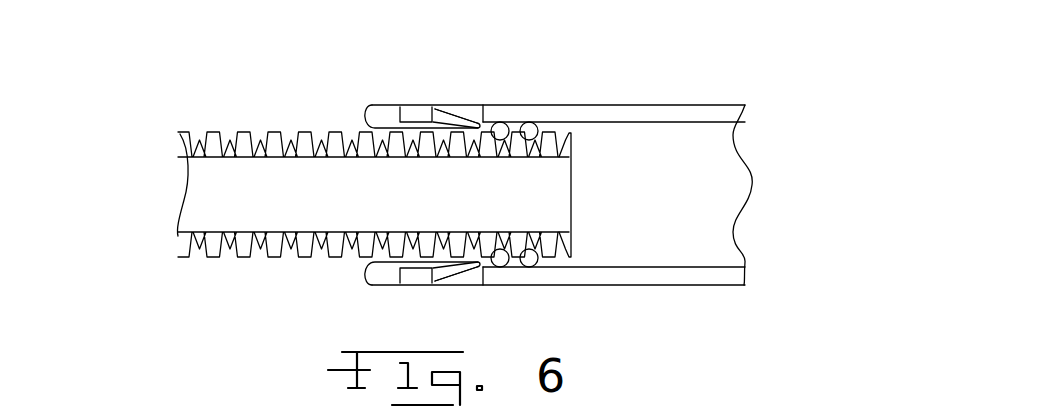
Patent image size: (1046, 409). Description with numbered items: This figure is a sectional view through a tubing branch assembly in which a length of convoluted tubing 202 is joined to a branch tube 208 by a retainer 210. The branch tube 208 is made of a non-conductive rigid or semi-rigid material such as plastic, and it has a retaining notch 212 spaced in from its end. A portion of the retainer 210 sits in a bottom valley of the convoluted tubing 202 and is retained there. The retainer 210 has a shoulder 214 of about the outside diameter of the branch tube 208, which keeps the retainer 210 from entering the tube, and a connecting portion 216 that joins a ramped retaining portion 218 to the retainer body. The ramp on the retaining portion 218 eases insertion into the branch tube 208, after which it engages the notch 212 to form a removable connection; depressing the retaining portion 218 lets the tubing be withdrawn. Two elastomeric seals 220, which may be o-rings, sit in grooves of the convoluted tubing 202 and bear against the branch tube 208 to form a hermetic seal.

The convoluted tubing 202 is at (210, 132).
The branch tube 208 is at (562, 191).
The retainer 210 is at (413, 182).
The retaining notch 212 is at (478, 104).
The shoulder 214 is at (388, 106).
The connecting portion 216 is at (417, 107).
The ramped retaining portion 218 is at (450, 106).
The elastomeric seal 220 is at (527, 268).